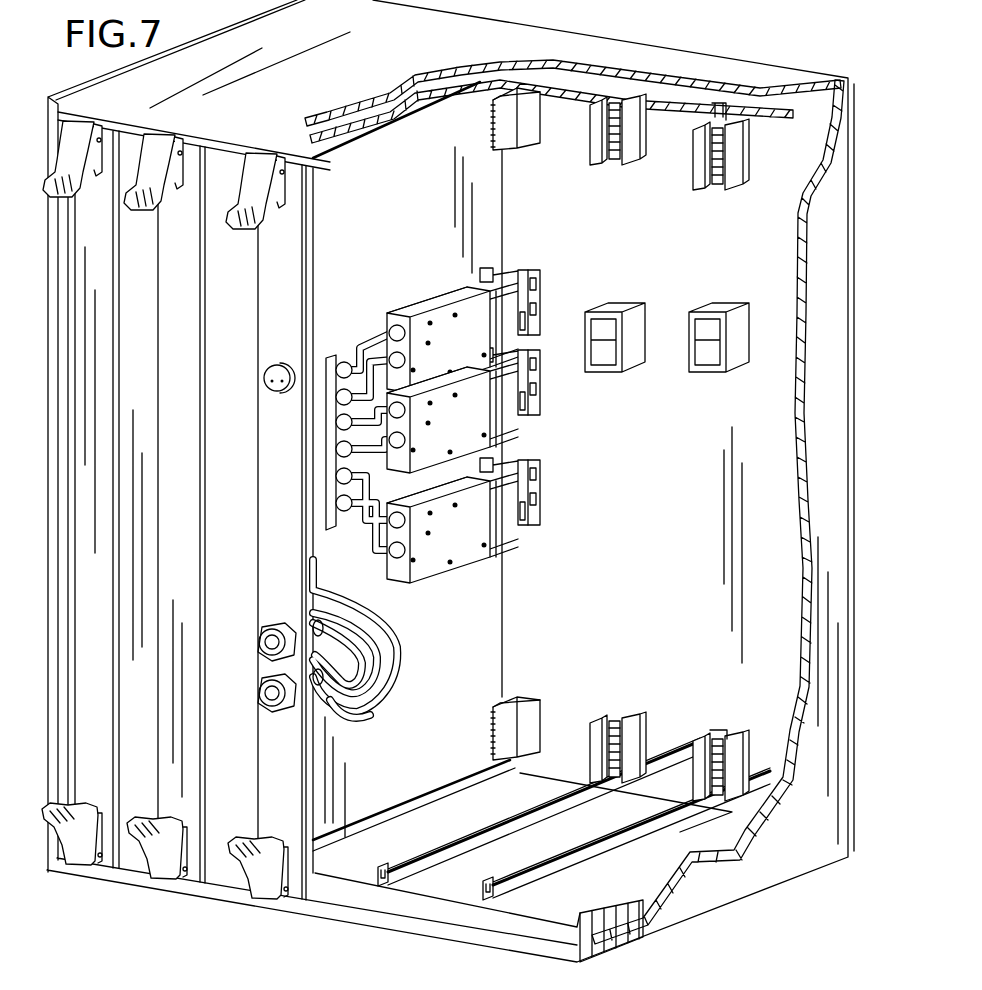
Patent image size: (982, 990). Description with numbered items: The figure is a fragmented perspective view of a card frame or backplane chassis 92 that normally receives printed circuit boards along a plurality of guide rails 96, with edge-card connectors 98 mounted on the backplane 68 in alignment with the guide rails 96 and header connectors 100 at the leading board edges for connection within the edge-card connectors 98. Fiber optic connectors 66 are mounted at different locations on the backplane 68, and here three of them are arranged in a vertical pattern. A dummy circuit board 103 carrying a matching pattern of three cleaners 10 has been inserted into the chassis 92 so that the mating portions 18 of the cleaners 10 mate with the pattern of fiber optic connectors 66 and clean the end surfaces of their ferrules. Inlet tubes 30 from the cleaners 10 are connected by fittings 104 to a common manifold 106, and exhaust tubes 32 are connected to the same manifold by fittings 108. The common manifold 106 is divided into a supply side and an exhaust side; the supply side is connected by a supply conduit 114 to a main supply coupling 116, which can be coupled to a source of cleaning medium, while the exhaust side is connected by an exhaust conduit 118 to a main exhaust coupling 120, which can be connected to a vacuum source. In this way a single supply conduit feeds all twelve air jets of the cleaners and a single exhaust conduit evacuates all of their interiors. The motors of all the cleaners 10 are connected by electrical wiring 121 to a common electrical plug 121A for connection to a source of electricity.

The backplane chassis 92 is at (676, 44).
The guide rails 96 is at (485, 75).
The header connectors 100 is at (505, 117).
The edge-card connectors 98 is at (530, 133).
The dummy circuit board 103 is at (405, 186).
The backplane 68 is at (705, 521).
The cleaners 10 is at (465, 413).
The mating portions 18 is at (503, 303).
The fiber optic connectors 66 is at (530, 330).
The electrical wiring 121 is at (333, 340).
The exhaust tubes 32 is at (400, 335).
The inlet tubes 30 is at (372, 345).
The common manifold 106 is at (331, 373).
The common electrical plug 121A is at (263, 378).
The fittings 104 is at (336, 385).
The fittings 108 is at (336, 410).
The main exhaust coupling 120 is at (267, 630).
The main supply coupling 116 is at (273, 705).
The exhaust conduit 118 is at (377, 683).
The supply conduit 114 is at (358, 718).